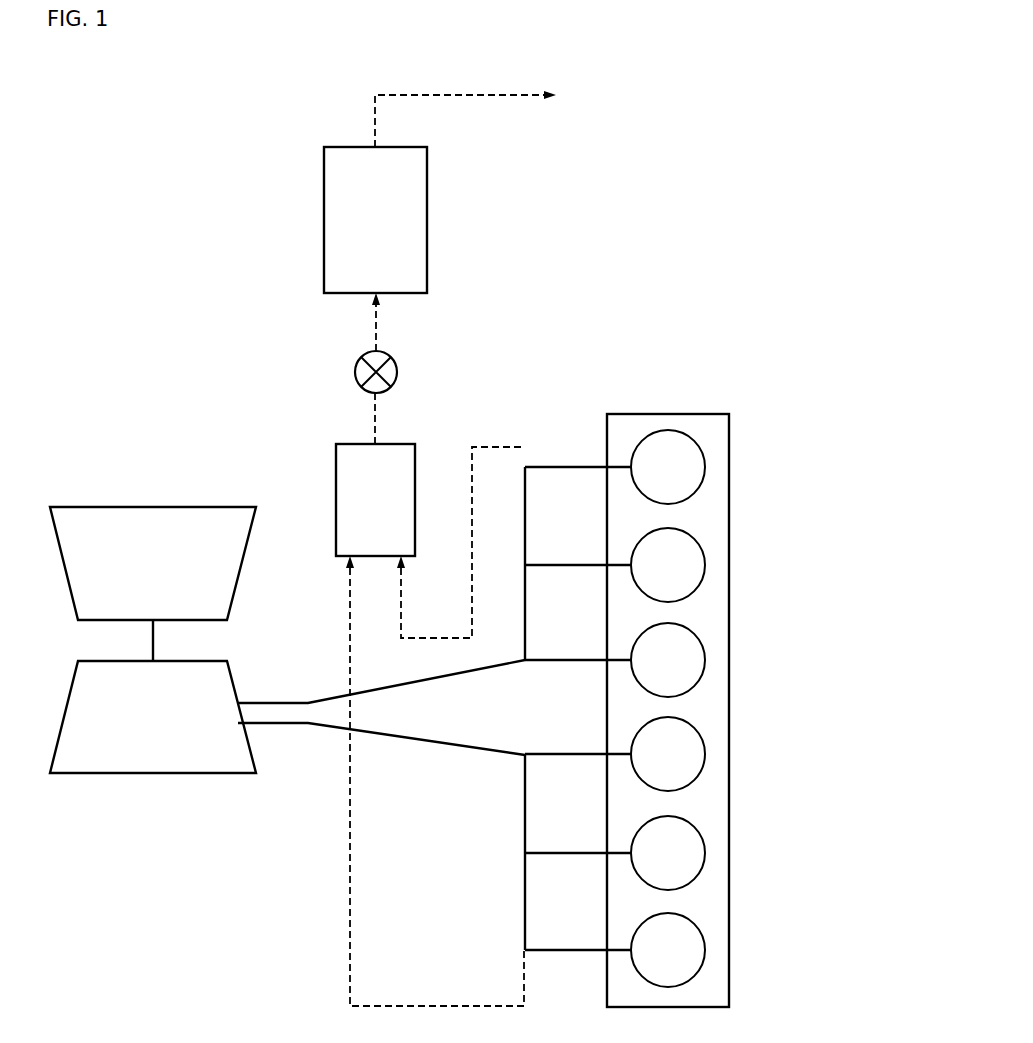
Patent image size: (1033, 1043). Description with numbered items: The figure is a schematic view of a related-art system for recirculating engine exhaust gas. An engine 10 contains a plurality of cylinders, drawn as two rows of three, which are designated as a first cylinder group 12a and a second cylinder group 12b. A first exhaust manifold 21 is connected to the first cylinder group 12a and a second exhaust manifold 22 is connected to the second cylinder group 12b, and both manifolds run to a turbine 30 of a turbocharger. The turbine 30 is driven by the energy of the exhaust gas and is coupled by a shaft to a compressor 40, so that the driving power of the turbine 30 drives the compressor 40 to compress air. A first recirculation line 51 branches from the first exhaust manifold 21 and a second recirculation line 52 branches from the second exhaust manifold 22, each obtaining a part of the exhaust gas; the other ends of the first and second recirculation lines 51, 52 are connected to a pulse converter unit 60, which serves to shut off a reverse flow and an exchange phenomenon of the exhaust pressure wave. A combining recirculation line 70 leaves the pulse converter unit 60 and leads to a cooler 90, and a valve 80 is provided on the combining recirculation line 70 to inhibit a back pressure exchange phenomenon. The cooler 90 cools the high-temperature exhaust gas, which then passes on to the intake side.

The engine 10 is at (686, 413).
The first cylinder group 12a is at (677, 476).
The second cylinder group 12b is at (677, 763).
The first exhaust manifold 21 is at (417, 682).
The second exhaust manifold 22 is at (417, 740).
The turbine 30 is at (135, 752).
The compressor 40 is at (121, 523).
The first recirculation line 51 is at (472, 543).
The second recirculation line 52 is at (436, 1005).
The pulse converter unit 60 is at (342, 477).
The combining recirculation line 70 is at (375, 418).
The valve 80 is at (356, 367).
The cooler 90 is at (325, 220).